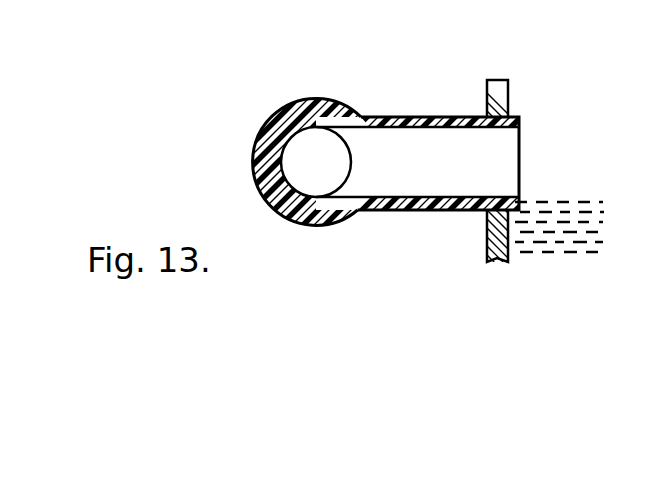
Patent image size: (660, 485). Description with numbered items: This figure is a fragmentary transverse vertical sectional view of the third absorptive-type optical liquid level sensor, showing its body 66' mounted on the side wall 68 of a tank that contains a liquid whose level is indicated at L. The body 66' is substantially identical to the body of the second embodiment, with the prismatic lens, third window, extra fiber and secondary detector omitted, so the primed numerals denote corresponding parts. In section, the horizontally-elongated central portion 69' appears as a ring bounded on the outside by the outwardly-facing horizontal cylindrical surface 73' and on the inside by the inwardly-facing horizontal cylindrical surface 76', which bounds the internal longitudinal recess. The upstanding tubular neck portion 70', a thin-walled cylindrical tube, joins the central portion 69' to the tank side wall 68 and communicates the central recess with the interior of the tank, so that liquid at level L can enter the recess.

The body 66' is at (366, 163).
The central portion 69' is at (366, 165).
The outwardly-facing horizontal cylindrical surface 73' is at (290, 136).
The neck portion 70' is at (438, 132).
The inwardly-facing horizontal cylindrical surface 76' is at (400, 162).
The side wall 68 is at (509, 88).
The liquid level L is at (560, 202).